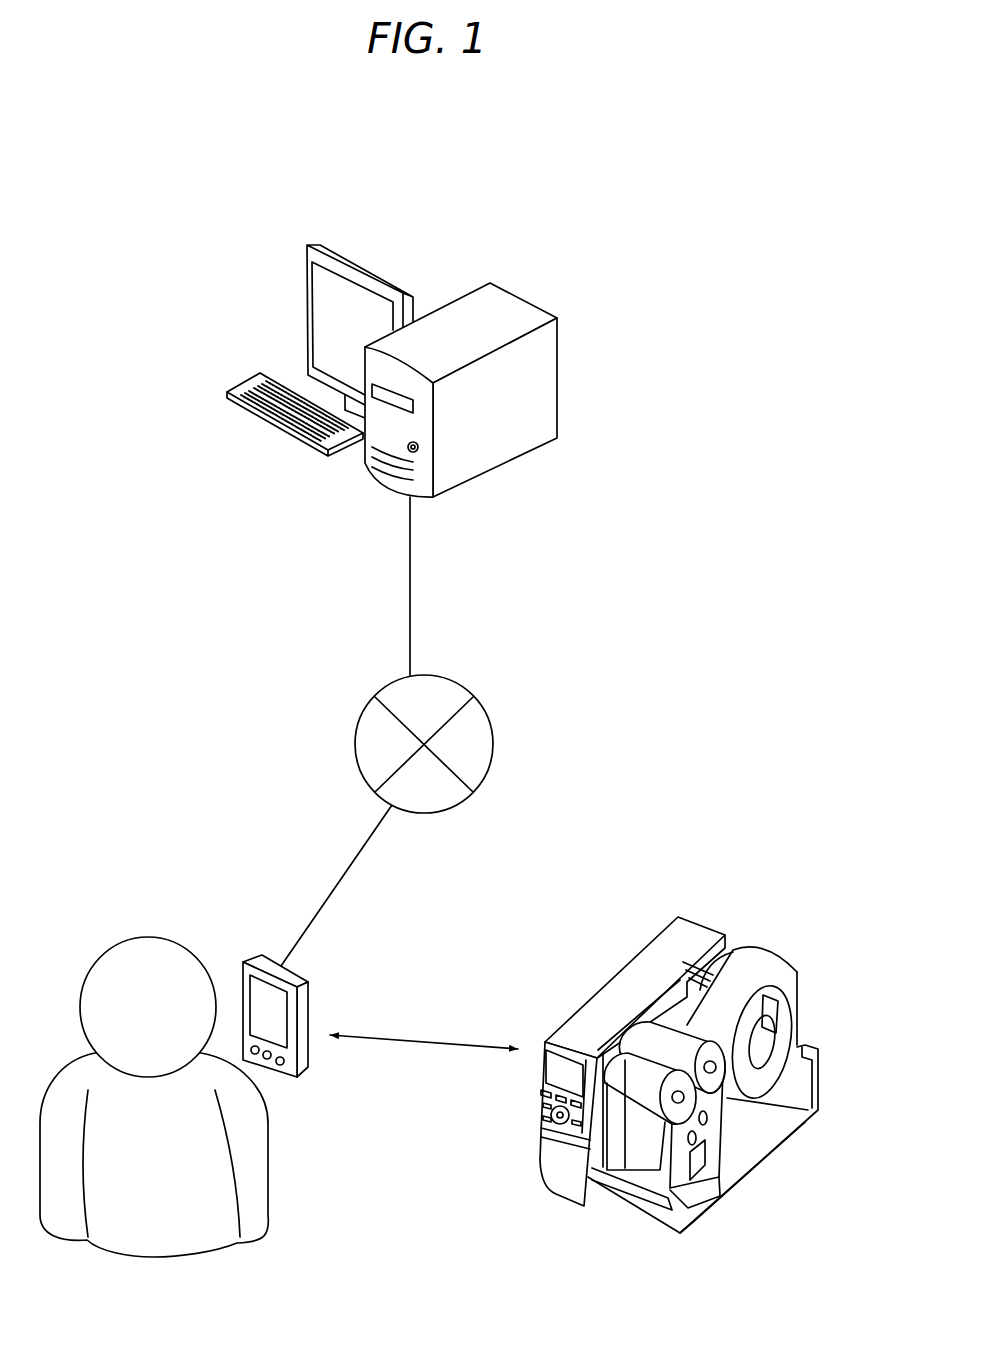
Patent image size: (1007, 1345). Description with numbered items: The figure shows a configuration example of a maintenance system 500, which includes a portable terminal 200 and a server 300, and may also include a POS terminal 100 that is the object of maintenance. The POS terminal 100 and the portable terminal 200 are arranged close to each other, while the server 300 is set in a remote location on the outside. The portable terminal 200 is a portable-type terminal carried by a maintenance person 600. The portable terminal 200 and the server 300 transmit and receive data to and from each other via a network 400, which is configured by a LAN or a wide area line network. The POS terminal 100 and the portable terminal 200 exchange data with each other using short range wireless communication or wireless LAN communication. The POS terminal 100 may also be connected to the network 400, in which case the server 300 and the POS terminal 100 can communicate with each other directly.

The POS terminal 100 is at (737, 918).
The portable terminal 200 is at (312, 957).
The server 300 is at (490, 260).
The network 400 is at (488, 692).
The maintenance system 500 is at (693, 218).
The maintenance person 600 is at (117, 922).